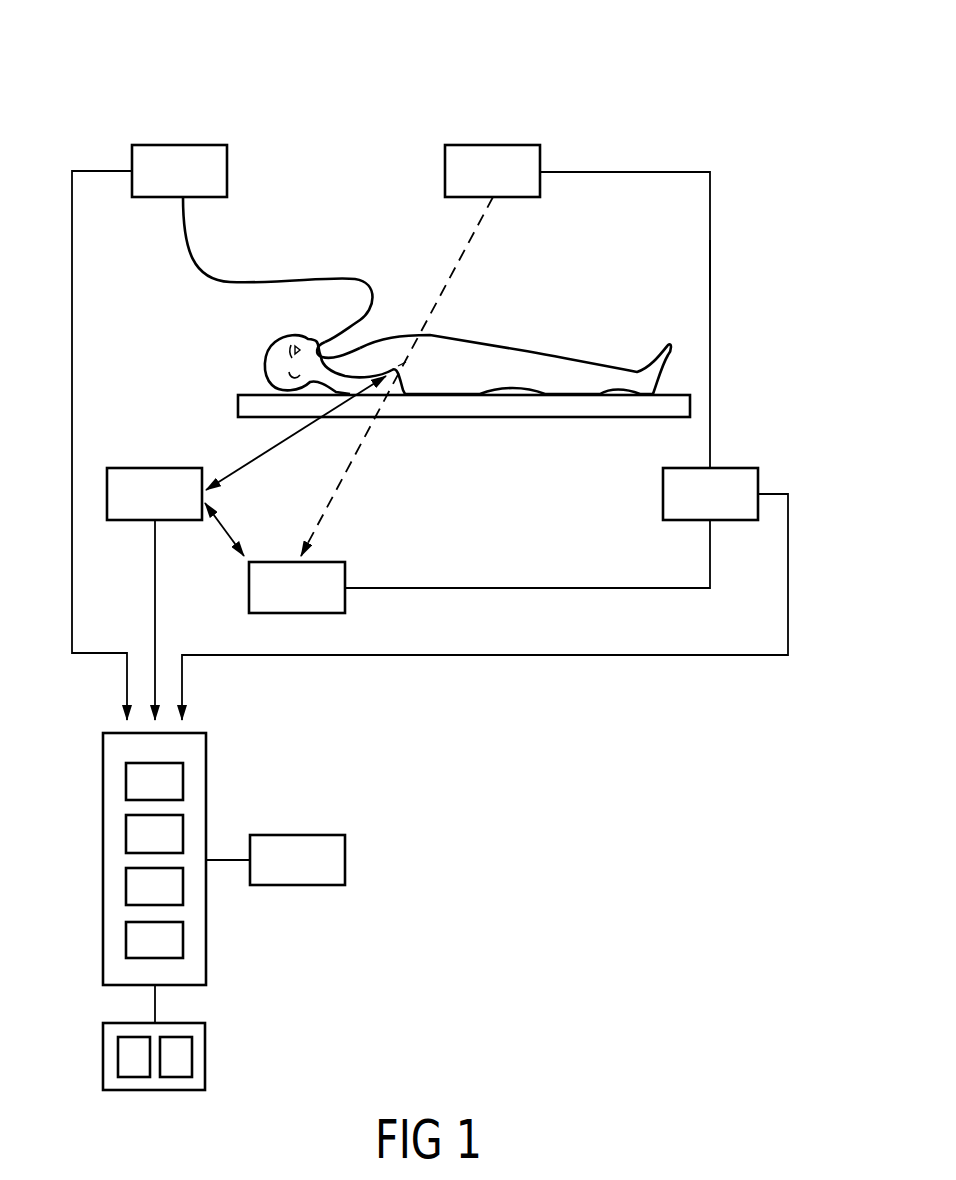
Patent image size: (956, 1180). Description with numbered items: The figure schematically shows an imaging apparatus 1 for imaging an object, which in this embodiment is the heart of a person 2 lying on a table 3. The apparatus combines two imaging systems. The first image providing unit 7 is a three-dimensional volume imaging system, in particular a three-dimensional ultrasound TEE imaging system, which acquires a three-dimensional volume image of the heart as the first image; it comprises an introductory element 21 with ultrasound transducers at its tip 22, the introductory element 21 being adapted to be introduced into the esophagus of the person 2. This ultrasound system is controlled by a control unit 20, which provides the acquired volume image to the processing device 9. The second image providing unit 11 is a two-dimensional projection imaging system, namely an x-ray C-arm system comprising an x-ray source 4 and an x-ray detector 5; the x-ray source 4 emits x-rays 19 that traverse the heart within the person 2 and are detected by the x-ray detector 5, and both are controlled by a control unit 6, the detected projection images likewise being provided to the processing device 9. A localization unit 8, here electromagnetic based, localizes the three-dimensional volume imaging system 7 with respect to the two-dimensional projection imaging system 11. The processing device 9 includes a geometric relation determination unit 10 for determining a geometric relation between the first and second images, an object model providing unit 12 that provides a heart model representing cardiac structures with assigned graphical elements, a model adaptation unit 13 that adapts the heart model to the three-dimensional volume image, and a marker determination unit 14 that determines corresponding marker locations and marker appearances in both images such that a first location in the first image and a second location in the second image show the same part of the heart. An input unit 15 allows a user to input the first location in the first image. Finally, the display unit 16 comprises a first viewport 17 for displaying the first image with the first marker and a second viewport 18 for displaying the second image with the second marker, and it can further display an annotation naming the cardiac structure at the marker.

The imaging apparatus 1 is at (603, 86).
The person 2 is at (558, 364).
The table 3 is at (617, 408).
The x-ray source 4 is at (492, 145).
The x-ray detector 5 is at (273, 562).
The control unit 6 is at (736, 468).
The first image providing unit 7 is at (314, 256).
The localization unit 8 is at (155, 468).
The processing device 9 is at (208, 780).
The geometric relation determination unit 10 is at (135, 783).
The second image providing unit 11 is at (734, 264).
The object model providing unit 12 is at (135, 835).
The model adaptation unit 13 is at (135, 889).
The marker determination unit 14 is at (135, 940).
The input unit 15 is at (348, 858).
The display unit 16 is at (208, 1053).
The first viewport 17 is at (133, 1070).
The second viewport 18 is at (178, 1070).
The x-rays 19 is at (470, 246).
The control unit 20 is at (181, 145).
The introductory element 21 is at (231, 285).
The tip 22 is at (412, 372).